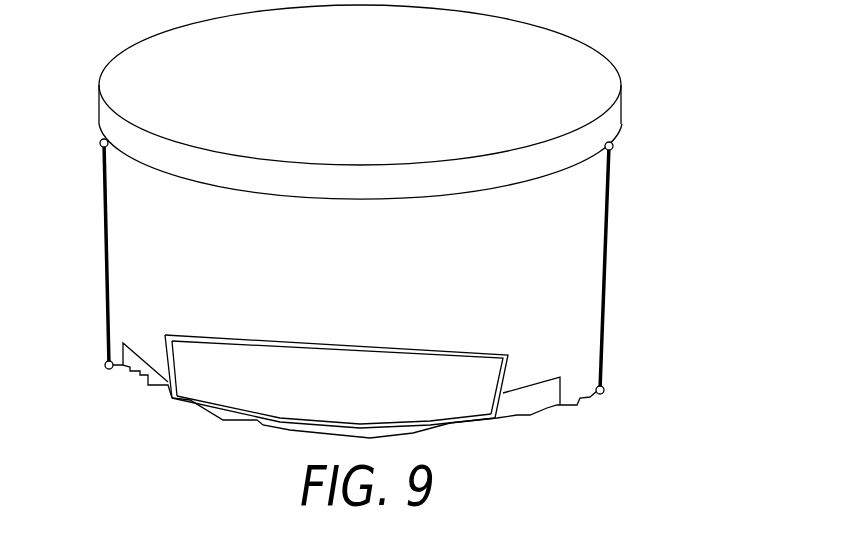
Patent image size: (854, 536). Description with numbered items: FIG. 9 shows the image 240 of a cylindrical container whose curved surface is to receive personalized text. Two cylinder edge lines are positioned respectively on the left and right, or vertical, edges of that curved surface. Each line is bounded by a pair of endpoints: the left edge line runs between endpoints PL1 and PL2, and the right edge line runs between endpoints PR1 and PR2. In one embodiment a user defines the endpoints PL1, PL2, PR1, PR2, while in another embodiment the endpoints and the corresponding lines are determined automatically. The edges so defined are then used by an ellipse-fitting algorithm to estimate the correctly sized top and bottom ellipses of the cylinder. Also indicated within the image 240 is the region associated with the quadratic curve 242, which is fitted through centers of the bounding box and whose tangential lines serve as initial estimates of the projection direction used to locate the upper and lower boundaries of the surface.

The image 240 is at (643, 45).
The quadratic curve 242 is at (272, 222).
The endpoint of left edge line PL1 is at (107, 139).
The endpoint of right edge line PR1 is at (606, 142).
The endpoint of left edge line PL2 is at (104, 363).
The endpoint of right edge line PR2 is at (605, 389).